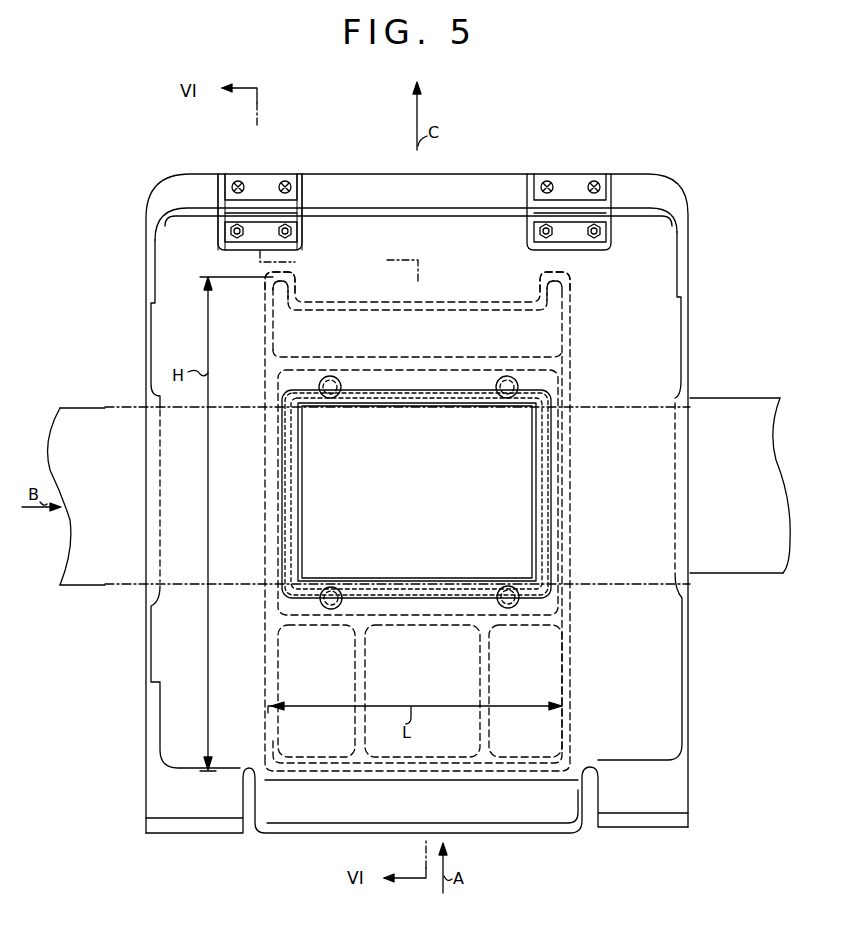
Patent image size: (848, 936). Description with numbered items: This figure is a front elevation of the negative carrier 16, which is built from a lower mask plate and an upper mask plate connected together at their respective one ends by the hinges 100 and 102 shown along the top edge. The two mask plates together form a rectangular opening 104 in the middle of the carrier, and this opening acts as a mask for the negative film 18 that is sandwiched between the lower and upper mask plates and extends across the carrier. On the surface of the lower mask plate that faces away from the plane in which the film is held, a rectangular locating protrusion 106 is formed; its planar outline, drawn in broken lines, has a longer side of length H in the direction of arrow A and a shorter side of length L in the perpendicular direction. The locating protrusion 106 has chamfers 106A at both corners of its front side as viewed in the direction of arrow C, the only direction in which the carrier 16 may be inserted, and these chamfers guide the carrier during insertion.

The negative carrier 16 is at (532, 156).
The negative film 18 is at (718, 397).
The hinge 100 is at (258, 185).
The hinge 102 is at (568, 183).
The rectangular opening 104 is at (413, 408).
The locating protrusion 106 is at (403, 302).
The chamfers 106A is at (262, 284).